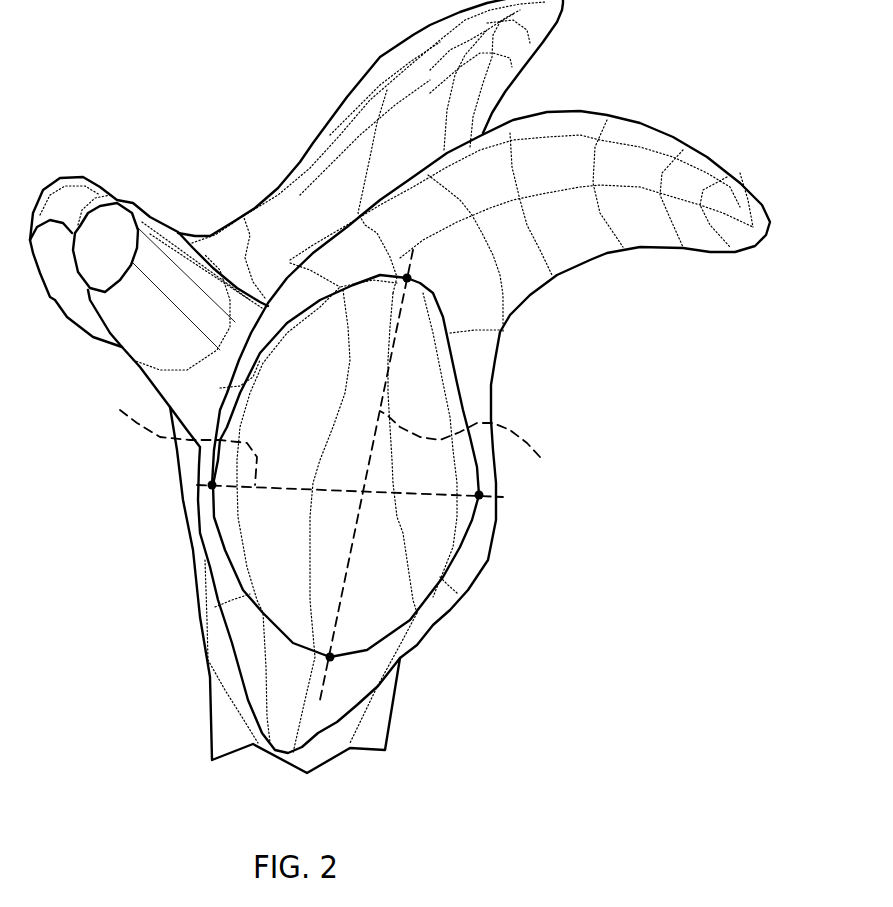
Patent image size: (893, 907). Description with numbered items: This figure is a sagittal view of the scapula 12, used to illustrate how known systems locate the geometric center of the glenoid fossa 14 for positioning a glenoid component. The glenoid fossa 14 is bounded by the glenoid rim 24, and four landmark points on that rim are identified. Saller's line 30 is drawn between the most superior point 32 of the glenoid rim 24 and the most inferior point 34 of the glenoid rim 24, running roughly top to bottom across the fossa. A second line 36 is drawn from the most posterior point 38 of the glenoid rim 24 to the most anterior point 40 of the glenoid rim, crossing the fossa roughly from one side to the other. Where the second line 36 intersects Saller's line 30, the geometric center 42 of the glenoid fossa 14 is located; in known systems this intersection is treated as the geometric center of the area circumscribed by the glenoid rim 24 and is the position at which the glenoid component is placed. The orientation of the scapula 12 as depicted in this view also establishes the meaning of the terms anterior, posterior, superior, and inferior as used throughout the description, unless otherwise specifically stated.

The scapula 12 is at (207, 137).
The glenoid fossa 14 is at (328, 360).
The glenoid rim 24 is at (460, 407).
The Saller's line 30 is at (473, 444).
The most superior point 32 is at (407, 278).
The most inferior point 34 is at (330, 657).
The second line 36 is at (179, 436).
The most posterior point 38 is at (212, 485).
The most anterior point 40 is at (480, 496).
The geometric center 42 is at (363, 490).